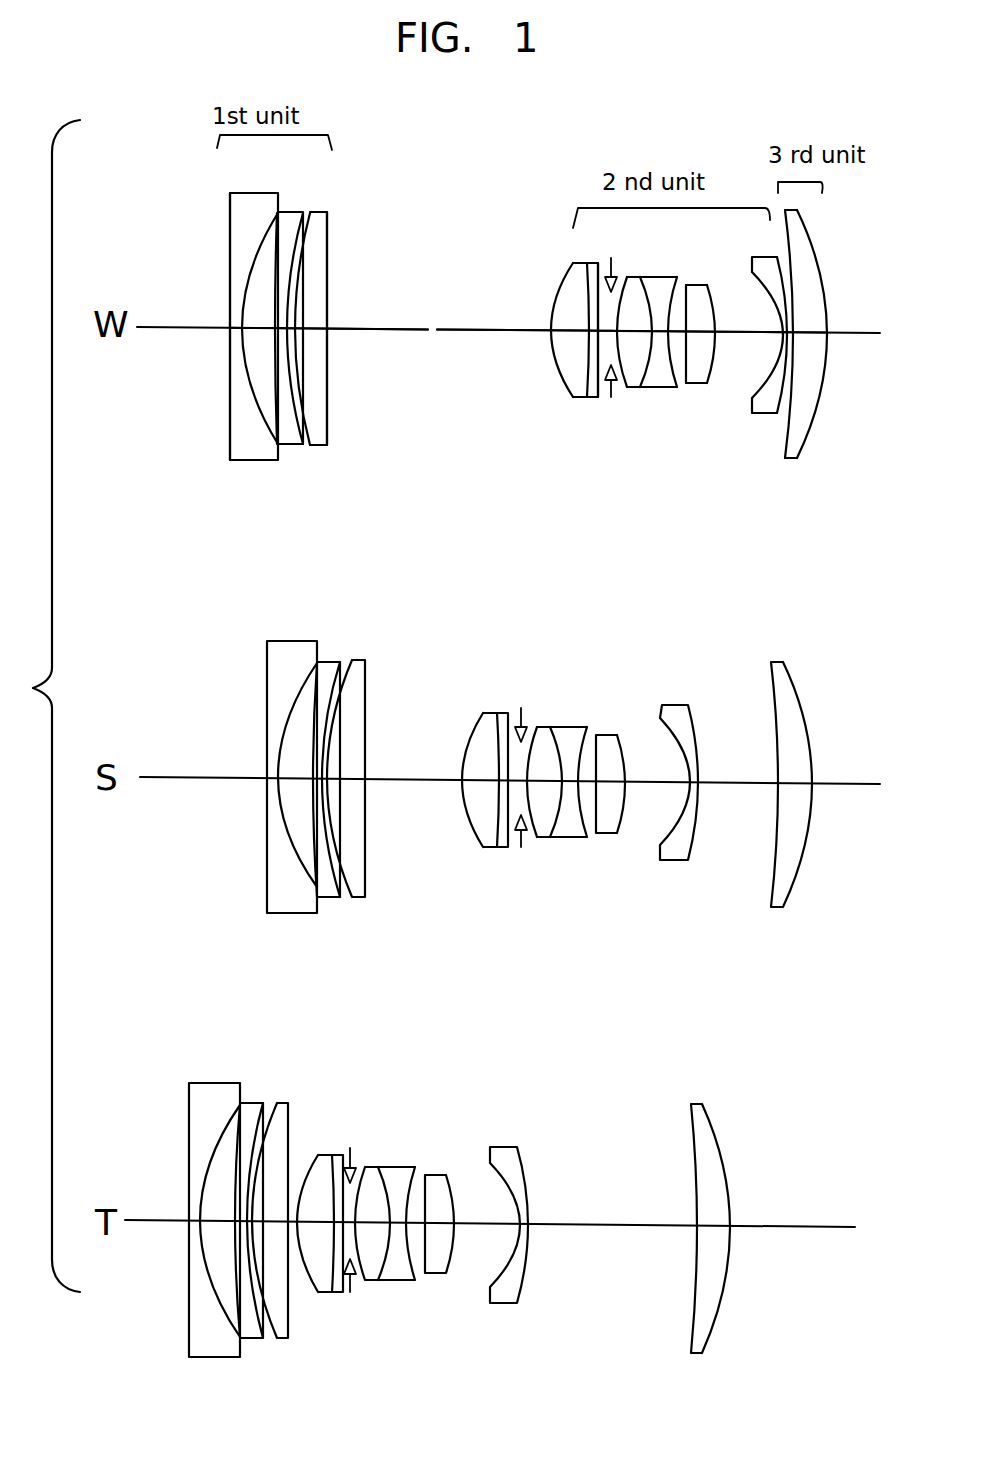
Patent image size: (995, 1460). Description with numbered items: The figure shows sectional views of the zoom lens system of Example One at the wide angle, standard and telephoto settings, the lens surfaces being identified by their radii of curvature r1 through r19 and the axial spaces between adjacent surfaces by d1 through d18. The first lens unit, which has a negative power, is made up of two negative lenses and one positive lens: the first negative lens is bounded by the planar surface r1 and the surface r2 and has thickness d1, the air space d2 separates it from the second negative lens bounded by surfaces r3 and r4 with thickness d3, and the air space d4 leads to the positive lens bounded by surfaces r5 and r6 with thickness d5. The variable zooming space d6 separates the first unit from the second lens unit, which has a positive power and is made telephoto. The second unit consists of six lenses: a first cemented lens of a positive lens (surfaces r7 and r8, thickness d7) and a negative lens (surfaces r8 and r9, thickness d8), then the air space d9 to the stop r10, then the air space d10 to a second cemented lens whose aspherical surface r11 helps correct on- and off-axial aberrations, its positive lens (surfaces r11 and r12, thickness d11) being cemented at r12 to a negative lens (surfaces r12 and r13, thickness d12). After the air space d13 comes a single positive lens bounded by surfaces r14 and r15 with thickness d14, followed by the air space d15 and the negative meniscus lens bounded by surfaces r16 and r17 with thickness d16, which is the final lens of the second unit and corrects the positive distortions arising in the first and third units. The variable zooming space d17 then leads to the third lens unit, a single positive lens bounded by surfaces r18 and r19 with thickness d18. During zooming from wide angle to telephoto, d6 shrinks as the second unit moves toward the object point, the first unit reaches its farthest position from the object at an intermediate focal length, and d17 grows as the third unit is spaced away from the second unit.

The radius of curvature of first lens surface r1 is at (230, 224).
The radius of curvature of second lens surface r2 is at (258, 228).
The radius of curvature of third lens surface r3 is at (281, 215).
The radius of curvature of fourth lens surface r4 is at (296, 214).
The radius of curvature of fifth lens surface r5 is at (305, 210).
The radius of curvature of sixth lens surface r6 is at (327, 250).
The radius of curvature of seventh lens surface r7 is at (565, 285).
The radius of curvature of eighth lens surface r8 is at (572, 268).
The radius of curvature of ninth lens surface r9 is at (598, 277).
The stop r10 is at (611, 275).
The radius of curvature of eleventh lens surface r11 is at (640, 278).
The radius of curvature of twelfth lens surface r12 is at (668, 280).
The radius of curvature of thirteenth lens surface r13 is at (684, 288).
The radius of curvature of fourteenth lens surface r14 is at (716, 275).
The radius of curvature of fifteenth lens surface r15 is at (712, 303).
The radius of curvature of sixteenth lens surface r16 is at (782, 296).
The radius of curvature of seventeenth lens surface r17 is at (778, 277).
The radius of curvature of eighteenth lens surface r18 is at (782, 242).
The radius of curvature of nineteenth lens surface r19 is at (813, 252).
The space between first and second lens surfaces d1 is at (232, 336).
The space between second and third lens surfaces d2 is at (247, 458).
The space between third and fourth lens surfaces d3 is at (290, 448).
The space between fourth and fifth lens surfaces d4 is at (313, 450).
The space between fifth and sixth lens surfaces d5 is at (307, 333).
The space between sixth and seventh lens surfaces d6 is at (440, 333).
The space between seventh and eighth lens surfaces d7 is at (562, 345).
The space between eighth and ninth lens surfaces d8 is at (590, 400).
The space between ninth lens surface and stop d9 is at (603, 345).
The space between stop and eleventh lens surface d10 is at (614, 350).
The space between eleventh and twelfth lens surfaces d11 is at (636, 390).
The space between twelfth and thirteenth lens surfaces d12 is at (660, 392).
The space between thirteenth and fourteenth lens surfaces d13 is at (680, 387).
The space between fourteenth and fifteenth lens surfaces d14 is at (710, 387).
The space between fifteenth and sixteenth lens surfaces d15 is at (742, 337).
The space between sixteenth and seventeenth lens surfaces d16 is at (776, 358).
The space between seventeenth and eighteenth lens surfaces d17 is at (788, 345).
The space between eighteenth and nineteenth lens surfaces d18 is at (808, 355).